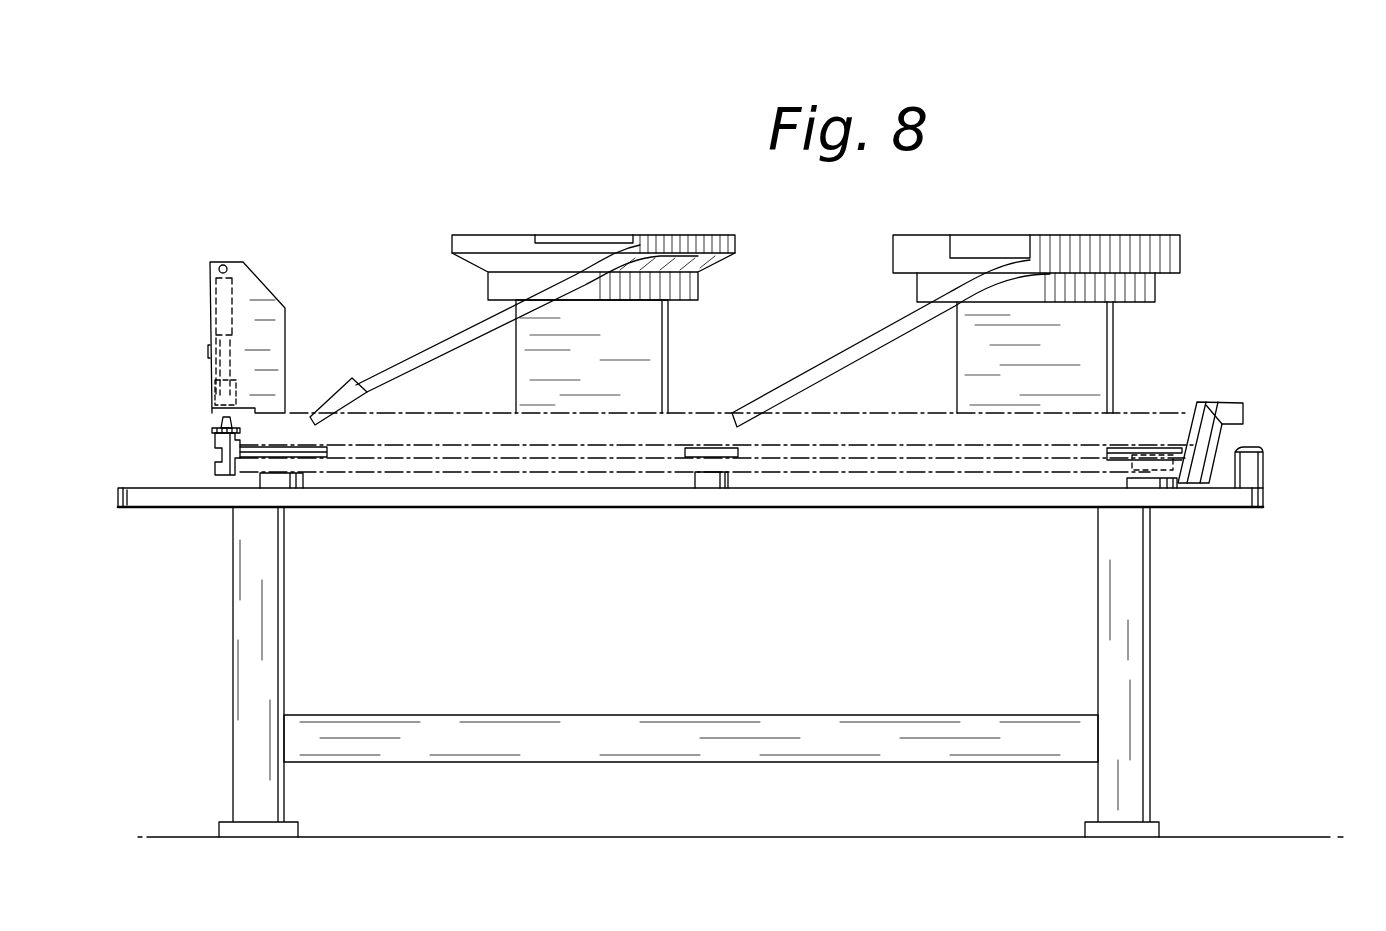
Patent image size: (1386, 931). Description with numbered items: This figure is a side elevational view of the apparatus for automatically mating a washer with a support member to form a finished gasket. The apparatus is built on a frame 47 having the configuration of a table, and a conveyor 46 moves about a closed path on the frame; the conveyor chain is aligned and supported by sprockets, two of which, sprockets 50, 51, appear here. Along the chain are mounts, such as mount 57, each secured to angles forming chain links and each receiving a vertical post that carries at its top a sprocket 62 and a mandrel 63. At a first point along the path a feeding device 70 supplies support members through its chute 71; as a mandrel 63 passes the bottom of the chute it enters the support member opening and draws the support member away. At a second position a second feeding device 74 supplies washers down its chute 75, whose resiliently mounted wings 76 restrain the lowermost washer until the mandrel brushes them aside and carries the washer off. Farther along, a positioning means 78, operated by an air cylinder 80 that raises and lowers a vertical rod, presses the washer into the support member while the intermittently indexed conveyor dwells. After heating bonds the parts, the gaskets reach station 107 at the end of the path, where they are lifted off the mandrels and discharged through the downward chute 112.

The conveyor 46 is at (862, 472).
The frame 47 is at (1267, 503).
The sprocket 50 is at (1118, 450).
The sprocket 51 is at (330, 462).
The mount 57 is at (215, 468).
The sprocket 62 is at (213, 430).
The mandrel 63 is at (220, 415).
The feeding device 70 is at (1094, 207).
The chute 71 is at (878, 330).
The second feeding device 74 is at (562, 212).
The chute 75 is at (452, 332).
The wings 76 is at (348, 378).
The positioning means 78 is at (215, 387).
The air cylinder 80 is at (210, 308).
The station 107 is at (1262, 432).
The chute 112 is at (1193, 473).